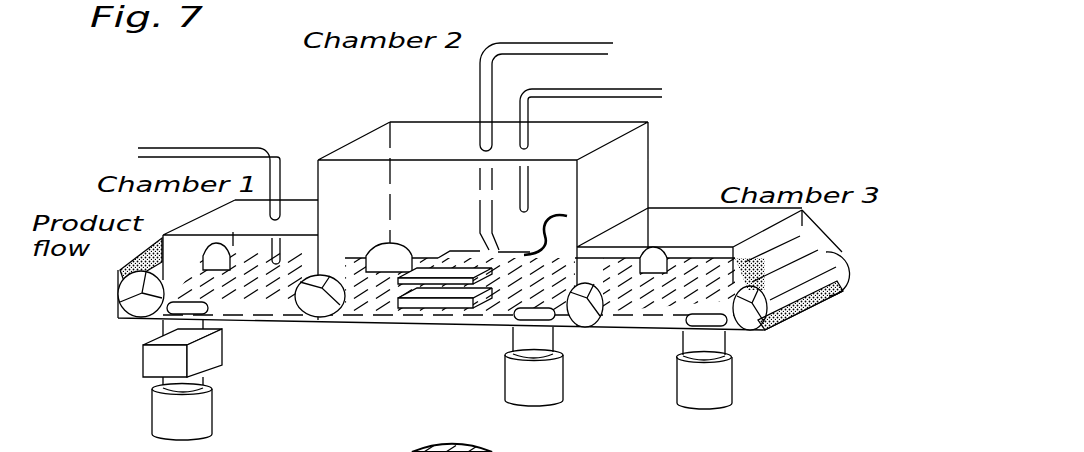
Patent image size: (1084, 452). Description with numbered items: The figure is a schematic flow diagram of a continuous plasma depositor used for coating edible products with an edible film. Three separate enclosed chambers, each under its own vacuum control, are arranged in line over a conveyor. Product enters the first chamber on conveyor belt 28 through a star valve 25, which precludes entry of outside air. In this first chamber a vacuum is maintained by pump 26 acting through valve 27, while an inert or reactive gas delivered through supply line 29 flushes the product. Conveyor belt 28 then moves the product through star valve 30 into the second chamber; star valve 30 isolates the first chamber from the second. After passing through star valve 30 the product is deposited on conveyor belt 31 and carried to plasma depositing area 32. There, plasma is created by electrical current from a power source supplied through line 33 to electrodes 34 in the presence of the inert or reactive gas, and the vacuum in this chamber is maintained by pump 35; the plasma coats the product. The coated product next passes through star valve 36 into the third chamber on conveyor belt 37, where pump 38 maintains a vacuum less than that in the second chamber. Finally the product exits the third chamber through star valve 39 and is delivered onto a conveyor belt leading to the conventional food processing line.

The star valve 25 is at (100, 295).
The pump 26 is at (150, 410).
The valve 27 is at (226, 367).
The conveyor belt 28 is at (290, 324).
The supply line 29 is at (125, 153).
The star valve 30 is at (363, 255).
The conveyor belt 31 is at (417, 263).
The plasma depositing area 32 is at (466, 292).
The line 33 is at (673, 95).
The electrodes 34 is at (627, 52).
The pump 35 is at (543, 408).
The star valve 36 is at (628, 275).
The conveyor belt 37 is at (654, 284).
The pump 38 is at (740, 388).
The star valve 39 is at (800, 297).